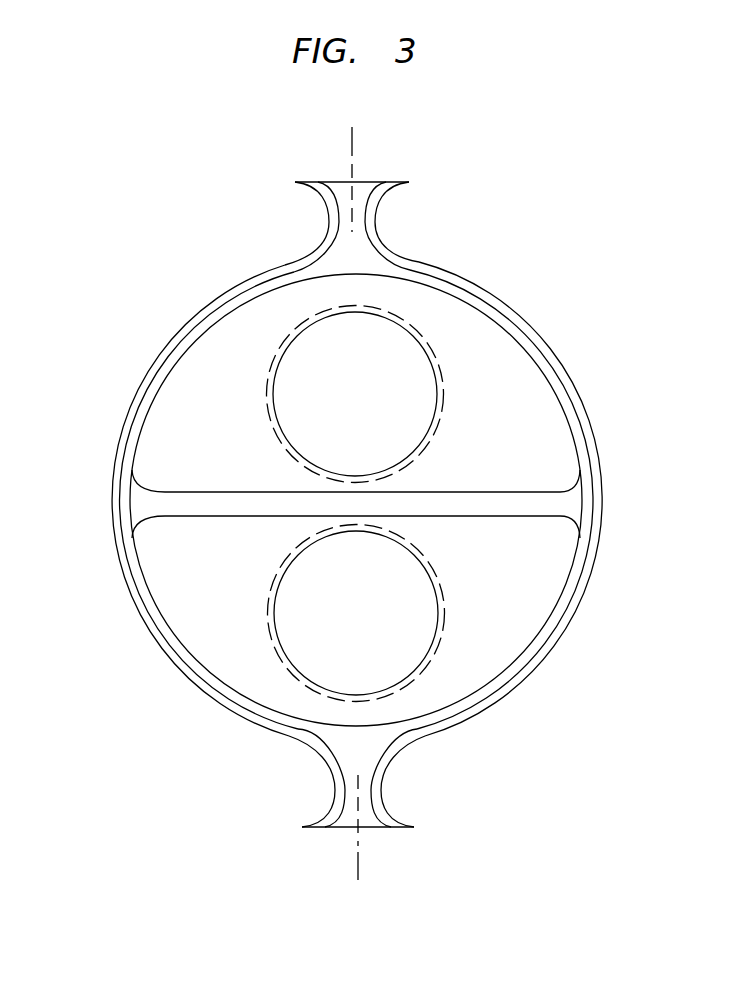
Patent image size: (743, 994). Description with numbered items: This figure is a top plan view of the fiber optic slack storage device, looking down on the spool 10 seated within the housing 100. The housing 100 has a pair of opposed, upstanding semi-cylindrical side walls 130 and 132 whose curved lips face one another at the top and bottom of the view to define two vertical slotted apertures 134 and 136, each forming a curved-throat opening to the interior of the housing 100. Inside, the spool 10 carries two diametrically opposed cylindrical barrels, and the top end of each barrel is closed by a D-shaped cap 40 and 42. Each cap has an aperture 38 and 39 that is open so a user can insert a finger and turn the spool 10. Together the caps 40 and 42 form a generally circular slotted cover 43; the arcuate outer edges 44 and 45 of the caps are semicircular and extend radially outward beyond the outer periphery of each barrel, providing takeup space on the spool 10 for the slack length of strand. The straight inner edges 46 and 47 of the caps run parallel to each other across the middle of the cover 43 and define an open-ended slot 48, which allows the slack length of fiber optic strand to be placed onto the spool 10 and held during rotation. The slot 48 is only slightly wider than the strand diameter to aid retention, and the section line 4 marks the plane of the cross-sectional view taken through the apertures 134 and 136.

The section line 4- 4 is at (366, 142).
The spool 10 is at (500, 364).
The aperture 38 is at (357, 355).
The aperture 39 is at (362, 652).
The D-shaped cap 40 is at (543, 448).
The D-shaped cap 42 is at (543, 555).
The slotted cover 43 is at (183, 433).
The arcuate outer edge 44 is at (240, 305).
The arcuate outer edge 45 is at (245, 703).
The inner edge 46 is at (163, 494).
The inner edge 47 is at (177, 517).
The open-ended slot 48 is at (550, 500).
The housing 100 is at (452, 262).
The side wall 130 is at (570, 390).
The side wall 132 is at (165, 353).
The slotted aperture 134 is at (358, 247).
The slotted aperture 136 is at (363, 762).